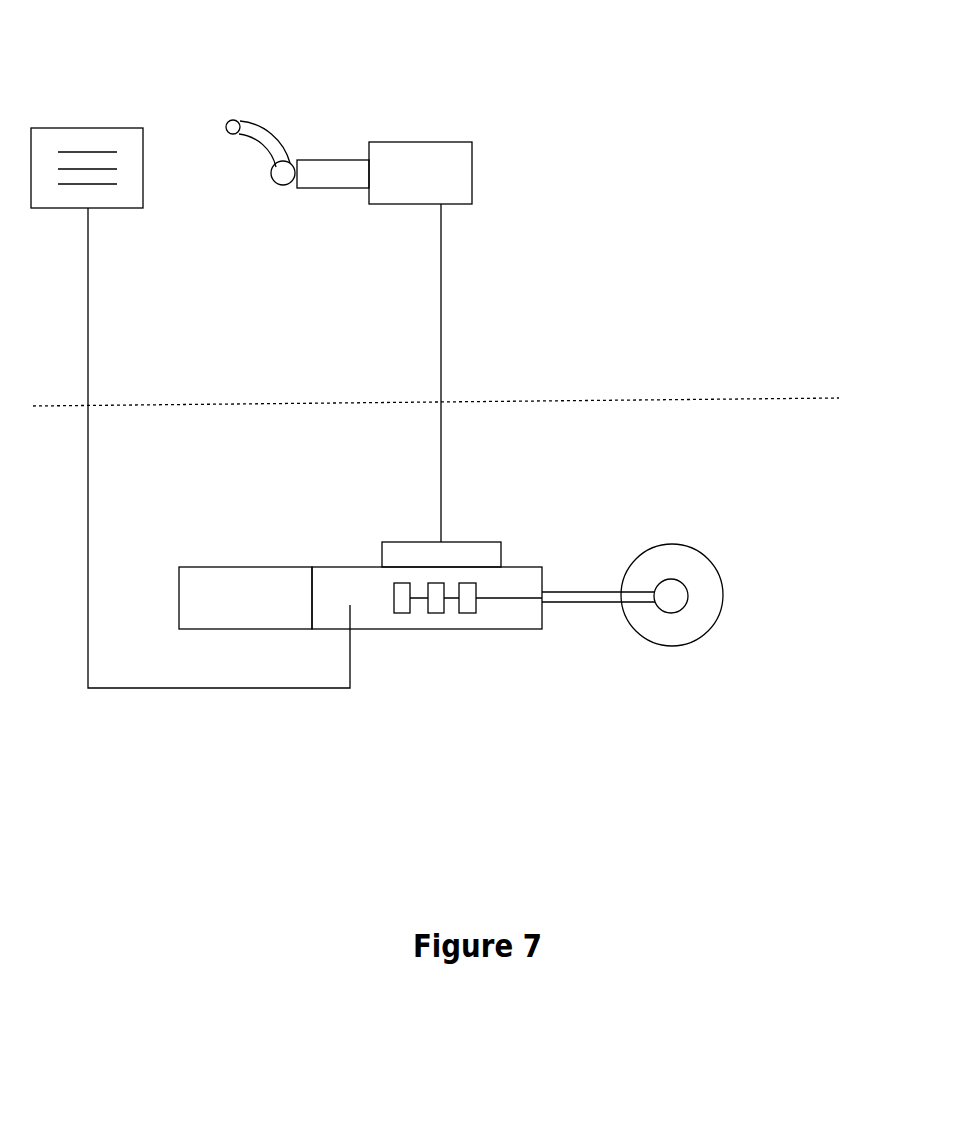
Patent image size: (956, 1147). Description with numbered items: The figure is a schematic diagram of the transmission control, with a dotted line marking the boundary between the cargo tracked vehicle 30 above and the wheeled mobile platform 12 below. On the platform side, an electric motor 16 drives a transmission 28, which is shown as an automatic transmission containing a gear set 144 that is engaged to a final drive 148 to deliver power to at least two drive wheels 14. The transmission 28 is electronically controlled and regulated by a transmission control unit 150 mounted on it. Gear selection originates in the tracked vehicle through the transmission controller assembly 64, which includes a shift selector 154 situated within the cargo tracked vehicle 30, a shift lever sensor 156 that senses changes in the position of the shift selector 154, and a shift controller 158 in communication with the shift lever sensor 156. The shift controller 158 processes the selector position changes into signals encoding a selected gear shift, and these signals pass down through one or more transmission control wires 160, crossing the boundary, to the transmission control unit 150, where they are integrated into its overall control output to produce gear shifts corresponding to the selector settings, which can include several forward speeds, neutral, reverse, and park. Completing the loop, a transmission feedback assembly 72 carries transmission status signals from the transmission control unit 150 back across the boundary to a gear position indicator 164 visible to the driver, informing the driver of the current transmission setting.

The gear position indicator 164 is at (65, 131).
The shift selector 154 is at (235, 120).
The shift lever sensor 156 is at (318, 165).
The shift controller 158 is at (420, 147).
The transmission feedback assembly 72 is at (100, 353).
The transmission controller assembly 64 is at (462, 377).
The cargo tracked vehicle 30 is at (799, 314).
The wheeled mobile platform 12 is at (800, 337).
The transmission control wires 160 is at (440, 444).
The transmission control unit 150 is at (445, 540).
The electric motor 16 is at (248, 570).
The transmission 28 is at (377, 652).
The gear set 144 is at (445, 622).
The final drive 148 is at (680, 592).
The drive wheels 14 is at (698, 638).